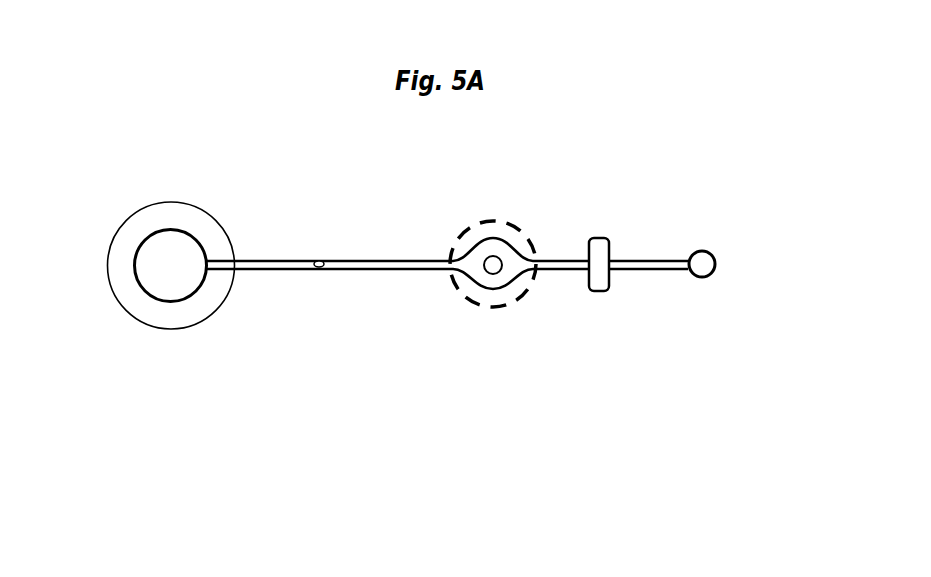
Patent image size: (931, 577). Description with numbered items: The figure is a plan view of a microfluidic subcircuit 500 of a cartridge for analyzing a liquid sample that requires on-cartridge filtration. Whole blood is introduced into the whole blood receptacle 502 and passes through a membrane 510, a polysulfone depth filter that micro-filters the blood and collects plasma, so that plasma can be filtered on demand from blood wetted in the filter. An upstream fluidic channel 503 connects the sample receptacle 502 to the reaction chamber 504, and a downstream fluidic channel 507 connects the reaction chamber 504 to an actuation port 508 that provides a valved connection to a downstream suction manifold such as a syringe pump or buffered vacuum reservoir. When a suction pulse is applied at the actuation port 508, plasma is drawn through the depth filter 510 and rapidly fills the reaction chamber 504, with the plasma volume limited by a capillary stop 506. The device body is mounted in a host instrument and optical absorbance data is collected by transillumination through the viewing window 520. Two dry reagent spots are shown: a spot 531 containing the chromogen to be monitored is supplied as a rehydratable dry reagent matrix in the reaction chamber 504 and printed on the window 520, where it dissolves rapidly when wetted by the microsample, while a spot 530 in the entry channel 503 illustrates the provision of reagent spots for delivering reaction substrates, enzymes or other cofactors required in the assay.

The microfluidic subcircuit 500 is at (427, 440).
The whole blood receptacle 502 is at (159, 227).
The upstream fluidic channel 503 is at (372, 258).
The reaction chamber 504 is at (493, 285).
The capillary stop 506 is at (600, 238).
The downstream fluidic channel 507 is at (565, 258).
The actuation port 508 is at (702, 249).
The membrane 510 is at (168, 331).
The viewing window 520 is at (443, 320).
The reagent spot 530 is at (317, 274).
The chromogen spot 531 is at (486, 255).